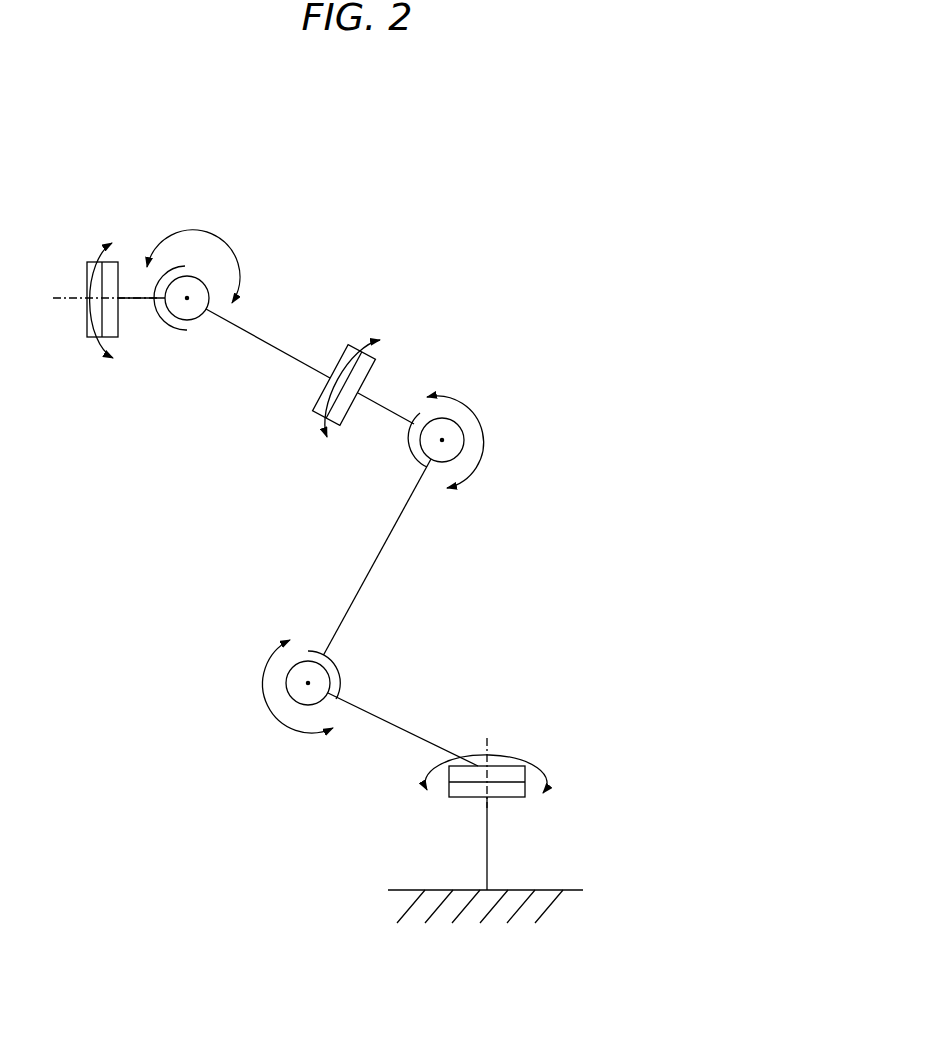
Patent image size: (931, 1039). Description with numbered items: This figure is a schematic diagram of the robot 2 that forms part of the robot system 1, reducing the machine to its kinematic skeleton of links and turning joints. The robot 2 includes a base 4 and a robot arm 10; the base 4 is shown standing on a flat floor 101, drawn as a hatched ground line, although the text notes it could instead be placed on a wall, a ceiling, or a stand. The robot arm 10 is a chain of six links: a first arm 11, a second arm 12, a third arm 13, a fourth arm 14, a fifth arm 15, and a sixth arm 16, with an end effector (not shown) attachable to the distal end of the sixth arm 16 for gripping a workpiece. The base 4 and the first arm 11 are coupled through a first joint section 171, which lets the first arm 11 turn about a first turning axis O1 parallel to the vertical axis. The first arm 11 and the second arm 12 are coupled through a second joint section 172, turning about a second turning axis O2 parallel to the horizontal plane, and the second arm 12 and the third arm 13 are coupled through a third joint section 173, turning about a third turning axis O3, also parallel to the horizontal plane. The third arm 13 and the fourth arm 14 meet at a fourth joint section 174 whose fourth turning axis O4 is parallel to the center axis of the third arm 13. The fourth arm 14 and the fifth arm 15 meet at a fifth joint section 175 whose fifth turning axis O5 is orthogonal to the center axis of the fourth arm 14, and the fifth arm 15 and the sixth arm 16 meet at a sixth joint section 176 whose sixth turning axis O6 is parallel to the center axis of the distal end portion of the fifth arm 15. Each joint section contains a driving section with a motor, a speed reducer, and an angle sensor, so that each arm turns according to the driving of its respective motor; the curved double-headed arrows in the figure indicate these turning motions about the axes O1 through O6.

The robot system 1 is at (458, 147).
The robot 2 is at (483, 175).
The robot arm 10 is at (498, 230).
The base 4 is at (572, 810).
The floor 101 is at (572, 887).
The first arm 11 is at (447, 700).
The second arm 12 is at (340, 555).
The third arm 13 is at (410, 385).
The fourth arm 14 is at (268, 318).
The fifth arm 15 is at (138, 310).
The sixth arm 16 is at (65, 310).
The first joint section 171 is at (560, 765).
The second joint section 172 is at (357, 645).
The third joint section 173 is at (398, 450).
The fourth joint section 174 is at (385, 317).
The fifth joint section 175 is at (203, 327).
The sixth joint section 176 is at (105, 222).
The first turning axis O1 is at (490, 742).
The second turning axis O2 is at (308, 683).
The third turning axis O3 is at (442, 440).
The fourth turning axis O4 is at (373, 392).
The fifth turning axis O5 is at (187, 300).
The sixth turning axis O6 is at (126, 293).